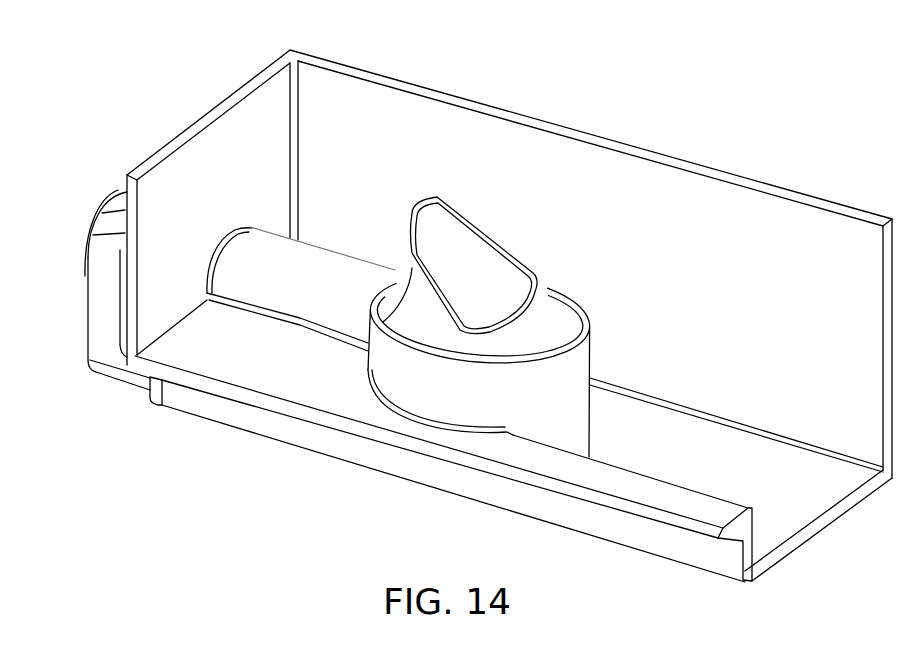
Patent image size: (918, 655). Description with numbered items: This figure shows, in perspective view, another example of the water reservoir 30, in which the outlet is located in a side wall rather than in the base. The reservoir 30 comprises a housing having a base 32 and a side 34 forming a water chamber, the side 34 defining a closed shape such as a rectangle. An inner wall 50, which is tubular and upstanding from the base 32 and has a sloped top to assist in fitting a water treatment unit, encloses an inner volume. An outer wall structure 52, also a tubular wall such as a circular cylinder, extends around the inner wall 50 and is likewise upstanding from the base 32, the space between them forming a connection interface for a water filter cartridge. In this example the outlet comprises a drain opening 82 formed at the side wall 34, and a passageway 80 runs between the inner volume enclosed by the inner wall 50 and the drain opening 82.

The water reservoir 30 is at (187, 107).
The base 32 is at (795, 500).
The side 34 is at (172, 290).
The inner wall 50 is at (518, 248).
The outer wall structure 52 is at (590, 353).
The passageway 80 is at (327, 256).
The drain opening 82 is at (92, 232).